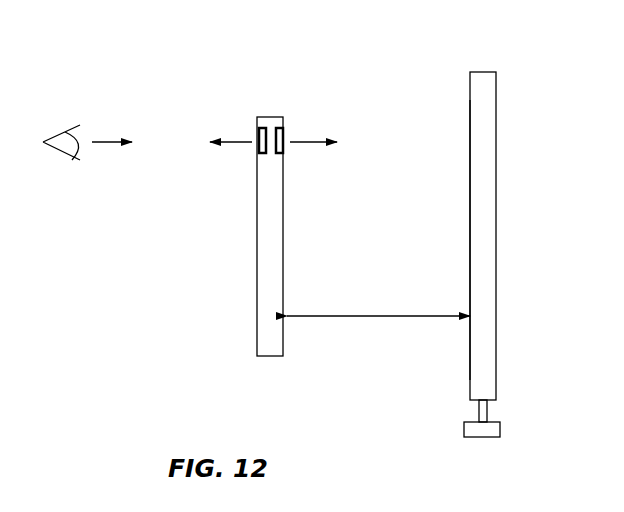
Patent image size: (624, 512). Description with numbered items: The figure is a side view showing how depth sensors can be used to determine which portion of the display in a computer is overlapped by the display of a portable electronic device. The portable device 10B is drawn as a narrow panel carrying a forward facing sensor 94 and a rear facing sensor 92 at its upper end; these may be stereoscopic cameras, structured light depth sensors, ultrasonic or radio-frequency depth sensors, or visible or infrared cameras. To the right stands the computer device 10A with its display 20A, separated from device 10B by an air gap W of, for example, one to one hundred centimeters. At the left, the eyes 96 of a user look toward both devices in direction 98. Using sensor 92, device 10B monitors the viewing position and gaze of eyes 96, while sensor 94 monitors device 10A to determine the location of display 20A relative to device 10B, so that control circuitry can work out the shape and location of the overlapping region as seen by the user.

The device 10A is at (492, 120).
The device 10B is at (267, 309).
The display 20A is at (470, 188).
The rear facing sensor 92 is at (284, 132).
The forward facing sensor 94 is at (258, 132).
The eyes 96 is at (57, 154).
The direction 98 is at (102, 146).
The air gap W is at (378, 330).